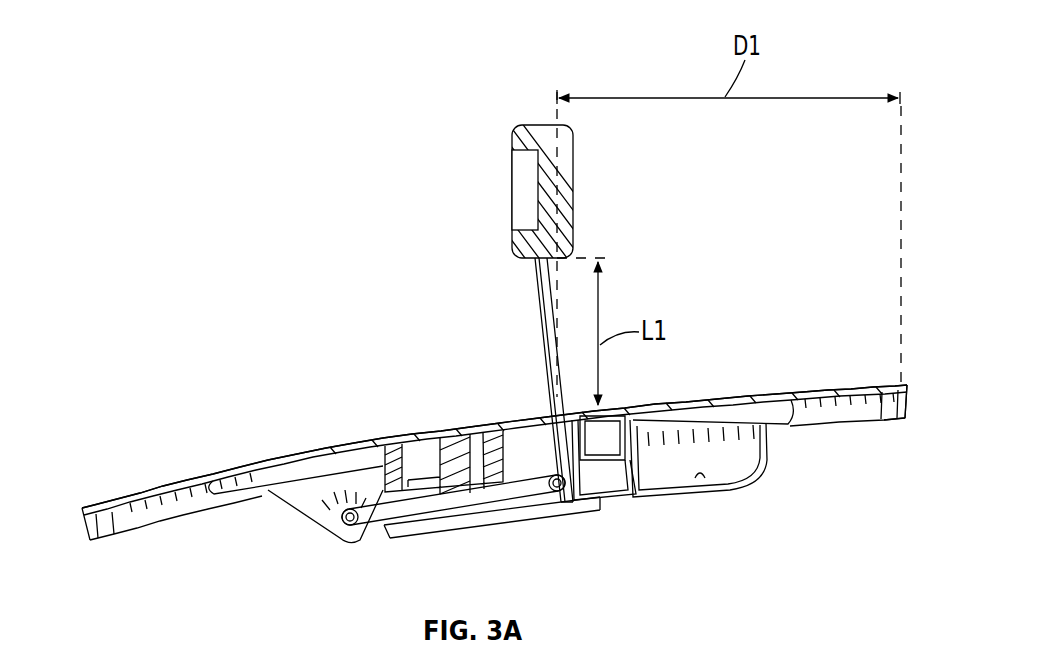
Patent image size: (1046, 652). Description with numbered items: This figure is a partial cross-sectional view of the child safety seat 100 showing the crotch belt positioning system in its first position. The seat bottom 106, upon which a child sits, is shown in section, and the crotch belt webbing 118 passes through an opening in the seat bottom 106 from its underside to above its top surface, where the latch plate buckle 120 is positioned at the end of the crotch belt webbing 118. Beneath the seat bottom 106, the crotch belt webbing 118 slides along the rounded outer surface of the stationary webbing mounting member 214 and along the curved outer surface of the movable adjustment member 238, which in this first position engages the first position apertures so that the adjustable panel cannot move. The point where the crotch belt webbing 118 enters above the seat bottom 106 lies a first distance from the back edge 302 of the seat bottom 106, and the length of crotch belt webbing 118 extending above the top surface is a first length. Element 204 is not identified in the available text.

The child safety seat 100 is at (838, 37).
The seat bottom 106 is at (131, 492).
The crotch belt webbing 118 is at (537, 272).
The latch plate buckle 120 is at (522, 172).
The linkage bar 204 is at (425, 473).
The webbing mounting member 214 is at (339, 540).
The movable adjustment member 238 is at (557, 491).
The back edge 302 is at (908, 404).